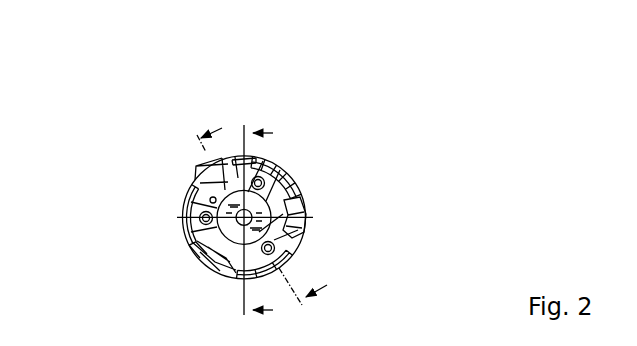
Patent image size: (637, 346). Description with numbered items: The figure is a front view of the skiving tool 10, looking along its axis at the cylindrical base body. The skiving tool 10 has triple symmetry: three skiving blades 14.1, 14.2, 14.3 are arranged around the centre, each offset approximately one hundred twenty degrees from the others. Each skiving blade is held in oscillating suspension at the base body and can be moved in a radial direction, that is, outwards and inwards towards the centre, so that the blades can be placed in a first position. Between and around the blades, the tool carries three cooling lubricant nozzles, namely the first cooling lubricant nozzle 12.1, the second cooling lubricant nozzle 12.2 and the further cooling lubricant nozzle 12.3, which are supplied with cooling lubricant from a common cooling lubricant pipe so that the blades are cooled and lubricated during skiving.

The skiving tool 10 is at (418, 130).
The first cooling lubricant nozzle 12.1 is at (211, 170).
The second cooling lubricant nozzle 12.2 is at (221, 268).
The cooling lubricant nozzle 12.3 is at (292, 212).
The skiving blade 14.1 is at (247, 156).
The skiving blade 14.2 is at (199, 251).
The skiving blade 14.3 is at (297, 243).